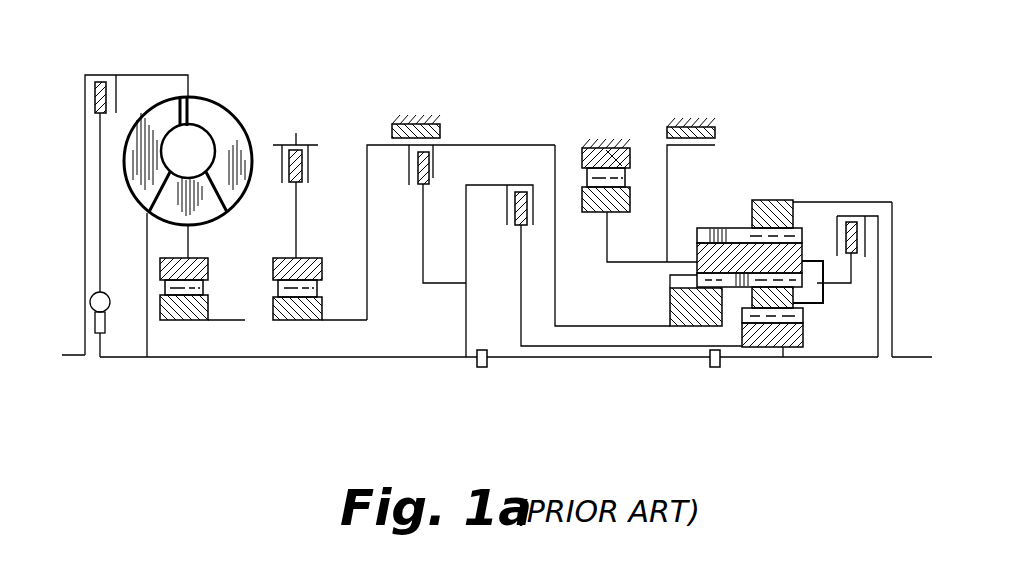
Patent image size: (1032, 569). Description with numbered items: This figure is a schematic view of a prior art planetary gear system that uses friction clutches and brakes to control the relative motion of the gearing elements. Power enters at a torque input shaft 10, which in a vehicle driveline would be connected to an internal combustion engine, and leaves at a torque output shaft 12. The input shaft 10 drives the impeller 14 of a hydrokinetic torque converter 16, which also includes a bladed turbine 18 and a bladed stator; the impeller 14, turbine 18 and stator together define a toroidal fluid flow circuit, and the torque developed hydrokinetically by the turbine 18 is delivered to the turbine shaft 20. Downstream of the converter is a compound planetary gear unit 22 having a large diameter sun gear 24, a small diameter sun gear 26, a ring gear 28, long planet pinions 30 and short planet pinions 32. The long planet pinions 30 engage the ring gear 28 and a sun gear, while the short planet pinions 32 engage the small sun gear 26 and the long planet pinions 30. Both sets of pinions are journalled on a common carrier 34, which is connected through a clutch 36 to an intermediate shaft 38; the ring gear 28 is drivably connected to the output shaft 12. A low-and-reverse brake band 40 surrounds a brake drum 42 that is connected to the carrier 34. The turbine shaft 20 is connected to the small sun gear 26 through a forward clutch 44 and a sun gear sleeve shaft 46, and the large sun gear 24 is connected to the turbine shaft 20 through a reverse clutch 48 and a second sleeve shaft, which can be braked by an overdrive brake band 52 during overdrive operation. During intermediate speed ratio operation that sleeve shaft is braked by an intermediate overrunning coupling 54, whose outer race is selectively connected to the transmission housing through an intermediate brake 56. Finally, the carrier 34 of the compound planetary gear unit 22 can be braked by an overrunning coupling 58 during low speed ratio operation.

The torque input shaft 10 is at (66, 357).
The torque output shaft 12 is at (914, 362).
The impeller 14 is at (227, 128).
The hydrokinetic torque converter 16 is at (212, 96).
The bladed turbine 18 is at (163, 117).
The turbine shaft 20 is at (203, 217).
The compound planetary gear unit 22 is at (771, 200).
The large diameter sun gear 24 is at (688, 317).
The small diameter sun gear 26 is at (783, 360).
The ring gear 28 is at (790, 198).
The long planet pinions 30 is at (728, 230).
The short planet pinions 32 is at (803, 313).
The common carrier 34 is at (823, 261).
The clutch 36 is at (858, 245).
The intermediate shaft 38 is at (612, 362).
The low-and-reverse brake band 40 is at (677, 123).
The brake drum 42 is at (706, 147).
The forward clutch 44 is at (538, 197).
The sun gear sleeve shaft 46 is at (549, 345).
The reverse clutch 48 is at (434, 180).
The overdrive brake band 52 is at (435, 118).
The intermediate overrunning coupling 54 is at (317, 288).
The intermediate brake 56 is at (299, 133).
The overrunning coupling 58 is at (605, 175).